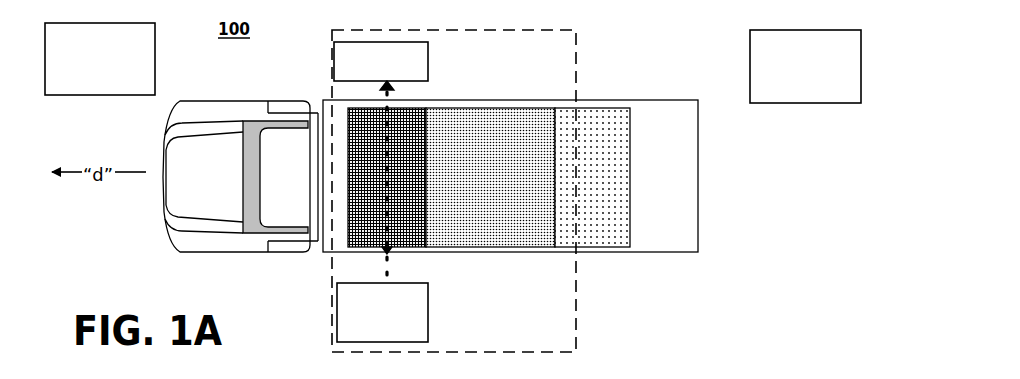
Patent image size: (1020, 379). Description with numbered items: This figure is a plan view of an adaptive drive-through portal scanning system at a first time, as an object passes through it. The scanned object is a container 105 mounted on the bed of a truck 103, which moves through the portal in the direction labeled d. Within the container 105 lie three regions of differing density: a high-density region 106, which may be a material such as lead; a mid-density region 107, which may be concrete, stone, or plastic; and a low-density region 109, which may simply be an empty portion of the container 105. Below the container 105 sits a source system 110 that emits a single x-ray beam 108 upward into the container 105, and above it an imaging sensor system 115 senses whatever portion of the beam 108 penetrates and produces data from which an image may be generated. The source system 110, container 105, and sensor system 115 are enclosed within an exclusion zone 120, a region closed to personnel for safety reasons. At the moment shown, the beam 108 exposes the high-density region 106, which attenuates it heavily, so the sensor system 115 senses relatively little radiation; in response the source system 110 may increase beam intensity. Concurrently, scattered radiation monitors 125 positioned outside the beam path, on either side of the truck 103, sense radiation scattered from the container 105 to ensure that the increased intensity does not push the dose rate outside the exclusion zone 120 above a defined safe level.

The truck 103 is at (140, 205).
The container 105 is at (698, 108).
The high-density region 106 is at (348, 234).
The mid-density region 107 is at (490, 177).
The x-ray beam 108 is at (387, 266).
The low-density region 109 is at (592, 177).
The source system 110 is at (428, 312).
The imaging sensor system 115 is at (428, 66).
The exclusion zone 120 is at (576, 45).
The scattered radiation monitor 125 is at (90, 95).